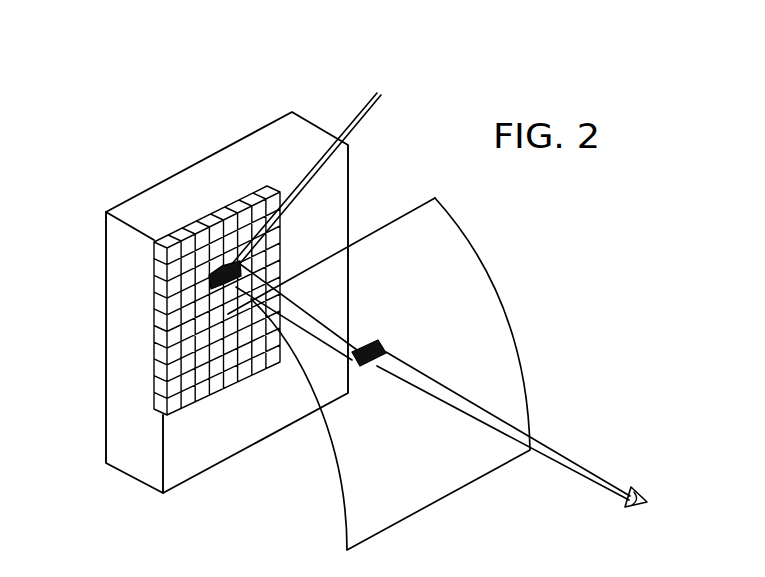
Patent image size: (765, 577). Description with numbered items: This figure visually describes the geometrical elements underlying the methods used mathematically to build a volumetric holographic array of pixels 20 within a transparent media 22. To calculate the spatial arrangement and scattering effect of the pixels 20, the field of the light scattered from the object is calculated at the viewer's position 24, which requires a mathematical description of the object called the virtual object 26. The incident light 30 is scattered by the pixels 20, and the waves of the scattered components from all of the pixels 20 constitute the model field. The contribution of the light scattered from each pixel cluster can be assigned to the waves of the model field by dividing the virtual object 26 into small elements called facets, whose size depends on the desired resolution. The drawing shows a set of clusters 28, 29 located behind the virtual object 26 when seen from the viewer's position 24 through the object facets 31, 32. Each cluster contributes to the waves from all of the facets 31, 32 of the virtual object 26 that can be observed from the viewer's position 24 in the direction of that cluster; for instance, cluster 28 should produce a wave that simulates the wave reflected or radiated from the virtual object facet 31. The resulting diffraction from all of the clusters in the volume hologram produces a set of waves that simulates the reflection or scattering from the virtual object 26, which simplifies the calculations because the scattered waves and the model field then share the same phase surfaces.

The pixels 20 is at (230, 380).
The transparent media 22 is at (132, 171).
The viewer's position 24 is at (628, 508).
The virtual object 26 is at (489, 278).
The cluster 28 is at (234, 264).
The cluster 29 is at (243, 265).
The incident light 30 is at (357, 120).
The object facet 31 is at (368, 366).
The object facet 32 is at (386, 343).